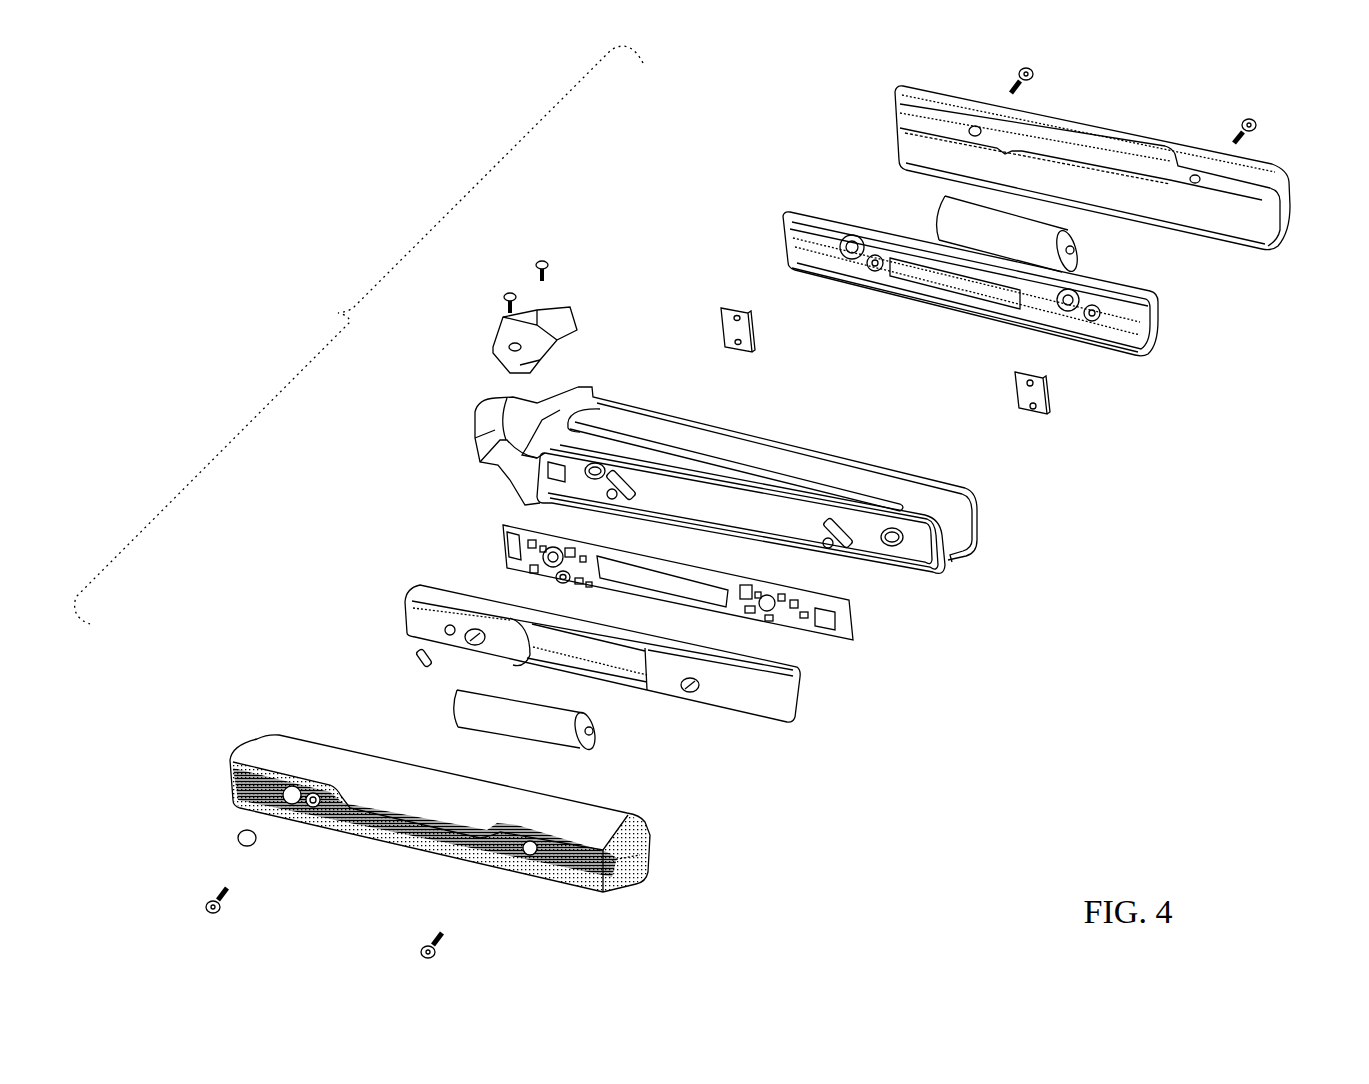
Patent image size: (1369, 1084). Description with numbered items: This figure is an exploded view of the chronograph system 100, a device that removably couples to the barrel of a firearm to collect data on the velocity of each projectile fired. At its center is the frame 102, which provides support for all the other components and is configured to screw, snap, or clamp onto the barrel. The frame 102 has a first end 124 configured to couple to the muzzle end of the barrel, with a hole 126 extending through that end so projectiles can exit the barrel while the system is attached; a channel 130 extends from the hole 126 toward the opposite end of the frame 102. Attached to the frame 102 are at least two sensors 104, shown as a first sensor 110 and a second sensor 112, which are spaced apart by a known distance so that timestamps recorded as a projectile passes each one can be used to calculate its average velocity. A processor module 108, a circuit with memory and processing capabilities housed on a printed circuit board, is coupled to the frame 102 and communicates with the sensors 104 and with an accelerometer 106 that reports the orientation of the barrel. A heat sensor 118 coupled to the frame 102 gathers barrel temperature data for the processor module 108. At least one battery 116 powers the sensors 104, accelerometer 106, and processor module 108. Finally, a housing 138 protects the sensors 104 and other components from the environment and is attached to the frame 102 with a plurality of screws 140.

The chronograph system 100 is at (359, 335).
The frame 102 is at (520, 442).
The sensors 104 is at (1022, 397).
The accelerometer 106 is at (560, 582).
The processor module 108 is at (828, 618).
The first sensor 110 is at (722, 310).
The second sensor 112 is at (1043, 400).
The battery 116 is at (947, 217).
The heat sensor 118 is at (527, 425).
The first end 124 is at (485, 403).
The hole 126 is at (952, 568).
The channel 130 is at (700, 466).
The housing 138 is at (1240, 223).
The screws 140 is at (1036, 77).